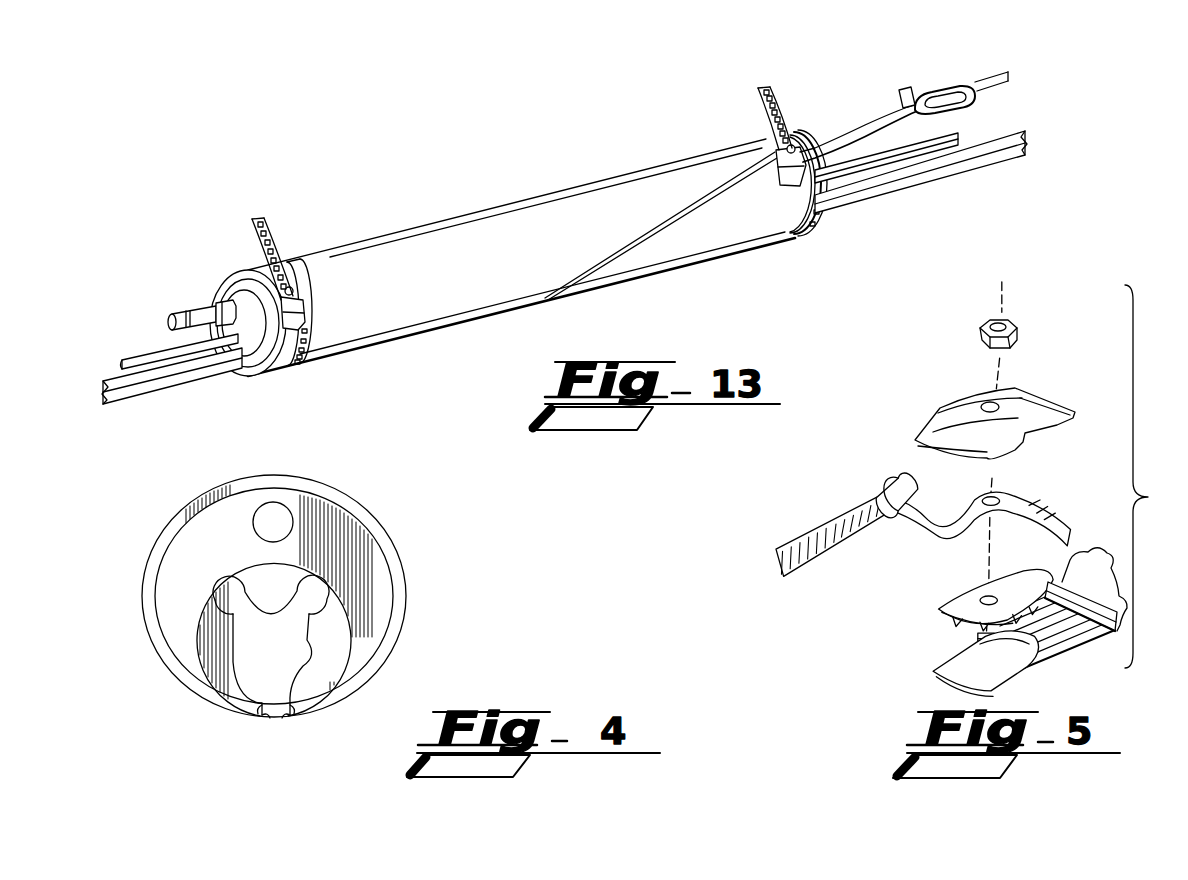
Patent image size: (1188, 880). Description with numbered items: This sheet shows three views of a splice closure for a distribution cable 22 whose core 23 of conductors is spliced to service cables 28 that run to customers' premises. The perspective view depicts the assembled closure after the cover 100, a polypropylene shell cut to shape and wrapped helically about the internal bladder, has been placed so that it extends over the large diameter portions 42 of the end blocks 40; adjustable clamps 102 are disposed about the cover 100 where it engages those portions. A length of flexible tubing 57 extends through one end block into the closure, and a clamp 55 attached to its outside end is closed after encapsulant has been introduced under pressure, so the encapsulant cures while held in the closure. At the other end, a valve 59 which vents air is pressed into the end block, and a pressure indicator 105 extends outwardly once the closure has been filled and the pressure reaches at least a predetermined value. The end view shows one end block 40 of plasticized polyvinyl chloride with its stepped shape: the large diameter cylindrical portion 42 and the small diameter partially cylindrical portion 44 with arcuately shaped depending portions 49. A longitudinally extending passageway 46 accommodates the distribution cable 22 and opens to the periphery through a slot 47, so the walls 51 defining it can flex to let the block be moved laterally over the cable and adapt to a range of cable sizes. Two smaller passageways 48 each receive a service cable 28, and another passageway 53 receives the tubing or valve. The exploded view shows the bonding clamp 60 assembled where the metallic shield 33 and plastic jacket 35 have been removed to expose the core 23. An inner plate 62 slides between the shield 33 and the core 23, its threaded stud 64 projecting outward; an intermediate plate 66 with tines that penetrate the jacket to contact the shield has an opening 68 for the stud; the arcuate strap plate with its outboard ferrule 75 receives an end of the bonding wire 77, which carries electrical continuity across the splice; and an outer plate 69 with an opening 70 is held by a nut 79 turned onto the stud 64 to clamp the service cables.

In FIG. 13, the cover 100 is at (407, 240).
In FIG. 13, the adjustable clamps 102 is at (267, 223).
In FIG. 13, the pressure indicator 105 is at (163, 307).
In FIG. 13, the valve 59 is at (183, 307).
In FIG. 13, the service cables 28 is at (157, 360).
In FIG. 13, the distribution cable 22 is at (133, 387).
In FIG. 13, the flexible tubing 57 is at (853, 130).
In FIG. 13, the clamp 55 is at (942, 84).
In FIG. 4, the end block 40 is at (272, 614).
In FIG. 4, the large diameter cylindrical portion 42 is at (402, 555).
In FIG. 4, the small diameter partially cylindrical portion 44 is at (385, 638).
In FIG. 4, the passageway 46 is at (303, 666).
In FIG. 4, the slot 47 is at (270, 707).
In FIG. 4, the passageways 48 is at (227, 597).
In FIG. 4, the arcuately shaped depending portions 49 is at (360, 648).
In FIG. 4, the walls 51 is at (233, 700).
In FIG. 4, the passageway 53 is at (287, 510).
In FIG. 5, the bonding clamp 60 is at (941, 494).
In FIG. 5, the inner plate 62 is at (943, 637).
In FIG. 5, the threaded stud 64 is at (957, 613).
In FIG. 5, the intermediate plate 66 is at (958, 592).
In FIG. 5, the opening 68 is at (960, 570).
In FIG. 5, the outer plate 69 is at (1012, 394).
In FIG. 5, the opening 70 is at (998, 398).
In FIG. 5, the ferrule 75 is at (872, 465).
In FIG. 5, the bonding wire 77 is at (797, 520).
In FIG. 5, the nut 79 is at (1007, 318).
In FIG. 5, the core 23 is at (1060, 647).
In FIG. 5, the metallic shield 33 is at (1060, 600).
In FIG. 5, the plastic jacket 35 is at (1093, 563).